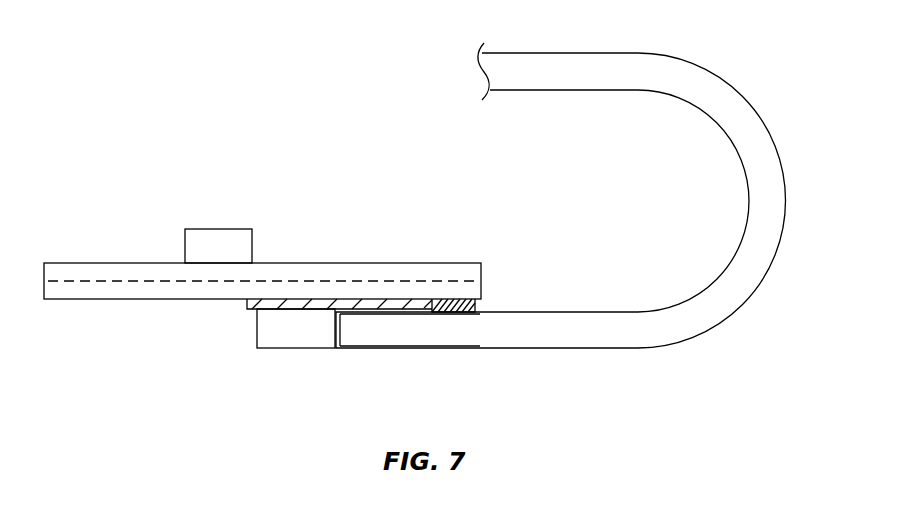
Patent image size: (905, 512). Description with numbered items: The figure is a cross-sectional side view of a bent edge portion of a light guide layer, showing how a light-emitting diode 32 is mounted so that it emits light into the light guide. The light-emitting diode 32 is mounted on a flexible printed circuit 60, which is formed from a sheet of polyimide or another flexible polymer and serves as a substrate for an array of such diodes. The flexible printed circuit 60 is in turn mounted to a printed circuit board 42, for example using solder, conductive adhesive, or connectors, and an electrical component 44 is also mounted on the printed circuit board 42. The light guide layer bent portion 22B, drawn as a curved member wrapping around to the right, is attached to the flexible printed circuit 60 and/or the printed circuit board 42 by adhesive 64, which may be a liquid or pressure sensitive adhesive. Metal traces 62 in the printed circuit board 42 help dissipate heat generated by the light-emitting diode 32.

The light guide layer bent portion 22B is at (776, 190).
The light-emitting diode 32 is at (298, 340).
The printed circuit board 42 is at (107, 292).
The electrical component 44 is at (222, 238).
The flexible printed circuit 60 is at (250, 304).
The metal traces 62 is at (158, 283).
The adhesive 64 is at (476, 306).